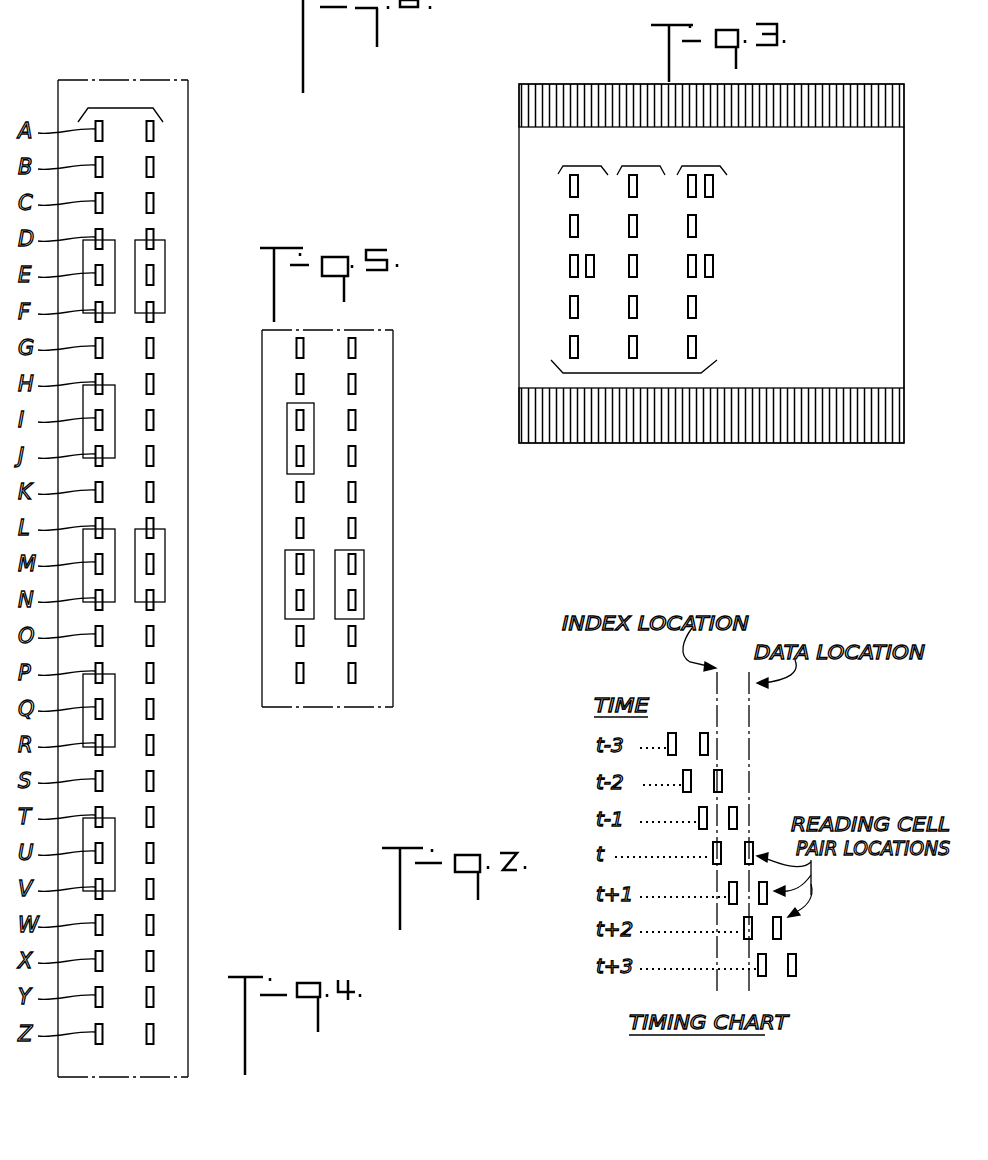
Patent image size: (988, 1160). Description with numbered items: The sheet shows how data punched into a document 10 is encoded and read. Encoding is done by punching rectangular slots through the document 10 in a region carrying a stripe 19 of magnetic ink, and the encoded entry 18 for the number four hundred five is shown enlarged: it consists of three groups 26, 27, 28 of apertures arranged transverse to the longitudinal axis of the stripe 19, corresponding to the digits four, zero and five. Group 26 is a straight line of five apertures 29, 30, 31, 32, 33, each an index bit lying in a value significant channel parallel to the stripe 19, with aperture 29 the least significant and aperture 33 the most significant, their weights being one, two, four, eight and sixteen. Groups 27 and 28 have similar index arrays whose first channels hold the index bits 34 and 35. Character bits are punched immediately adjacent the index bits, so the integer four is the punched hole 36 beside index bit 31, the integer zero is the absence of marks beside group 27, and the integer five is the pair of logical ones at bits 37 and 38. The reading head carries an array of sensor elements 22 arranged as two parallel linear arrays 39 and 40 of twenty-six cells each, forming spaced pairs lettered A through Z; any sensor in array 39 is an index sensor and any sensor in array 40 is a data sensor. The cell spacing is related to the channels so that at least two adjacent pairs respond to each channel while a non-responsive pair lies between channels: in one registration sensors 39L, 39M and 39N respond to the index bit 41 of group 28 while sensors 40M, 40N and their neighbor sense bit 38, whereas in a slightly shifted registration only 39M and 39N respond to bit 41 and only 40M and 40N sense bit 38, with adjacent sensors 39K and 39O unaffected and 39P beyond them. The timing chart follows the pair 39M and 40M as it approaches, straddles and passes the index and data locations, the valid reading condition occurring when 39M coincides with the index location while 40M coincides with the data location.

In FIG. 3, the document 10 is at (762, 445).
In FIG. 3, the encoded entry 18 is at (632, 374).
In FIG. 3, the stripe of magnetic ink 19 is at (890, 348).
In FIG. 4, the array of sensor elements 22 is at (124, 108).
In FIG. 3, the first group of apertures 26 is at (588, 153).
In FIG. 3, the second group of apertures 27 is at (643, 165).
In FIG. 3, the third group of apertures 28 is at (712, 153).
In FIG. 3, the aperture 29 is at (569, 186).
In FIG. 3, the aperture 30 is at (569, 226).
In FIG. 3, the aperture 31 is at (569, 266).
In FIG. 3, the aperture 32 is at (569, 307).
In FIG. 3, the aperture 33 is at (569, 347).
In FIG. 3, the index bit 34 is at (628, 191).
In FIG. 4, the index bit 35 is at (113, 314).
In FIG. 3, the index bit 35 is at (692, 199).
In FIG. 3, the punched hole 36 is at (595, 277).
In FIG. 4, the bit 37 is at (165, 246).
In FIG. 3, the bit 37 is at (714, 192).
In FIG. 4, the bit 38 is at (165, 541).
In FIG. 5, the bit 38 is at (364, 553).
In FIG. 3, the bit 38 is at (714, 272).
In FIG. 4, the array of sensing cells 39 is at (98, 1048).
In FIG. 4, the array of sensing cells 40 is at (148, 1048).
In FIG. 4, the index bit 41 is at (112, 602).
In FIG. 5, the index bit 41 is at (292, 619).
In FIG. 3, the index bit 41 is at (692, 278).
In FIG. 5, the sensor 39K is at (296, 492).
In FIG. 5, the sensor 39L is at (296, 530).
In FIG. 5, the sensor 39M is at (296, 565).
In FIG. 7, the sensor 39M is at (672, 732).
In FIG. 5, the sensor 39N is at (296, 601).
In FIG. 5, the sensor 39O is at (296, 636).
In FIG. 5, the sensor 39P is at (296, 676).
In FIG. 5, the sensor 40M is at (357, 566).
In FIG. 7, the sensor 40M is at (708, 741).
In FIG. 5, the sensor 40N is at (357, 601).